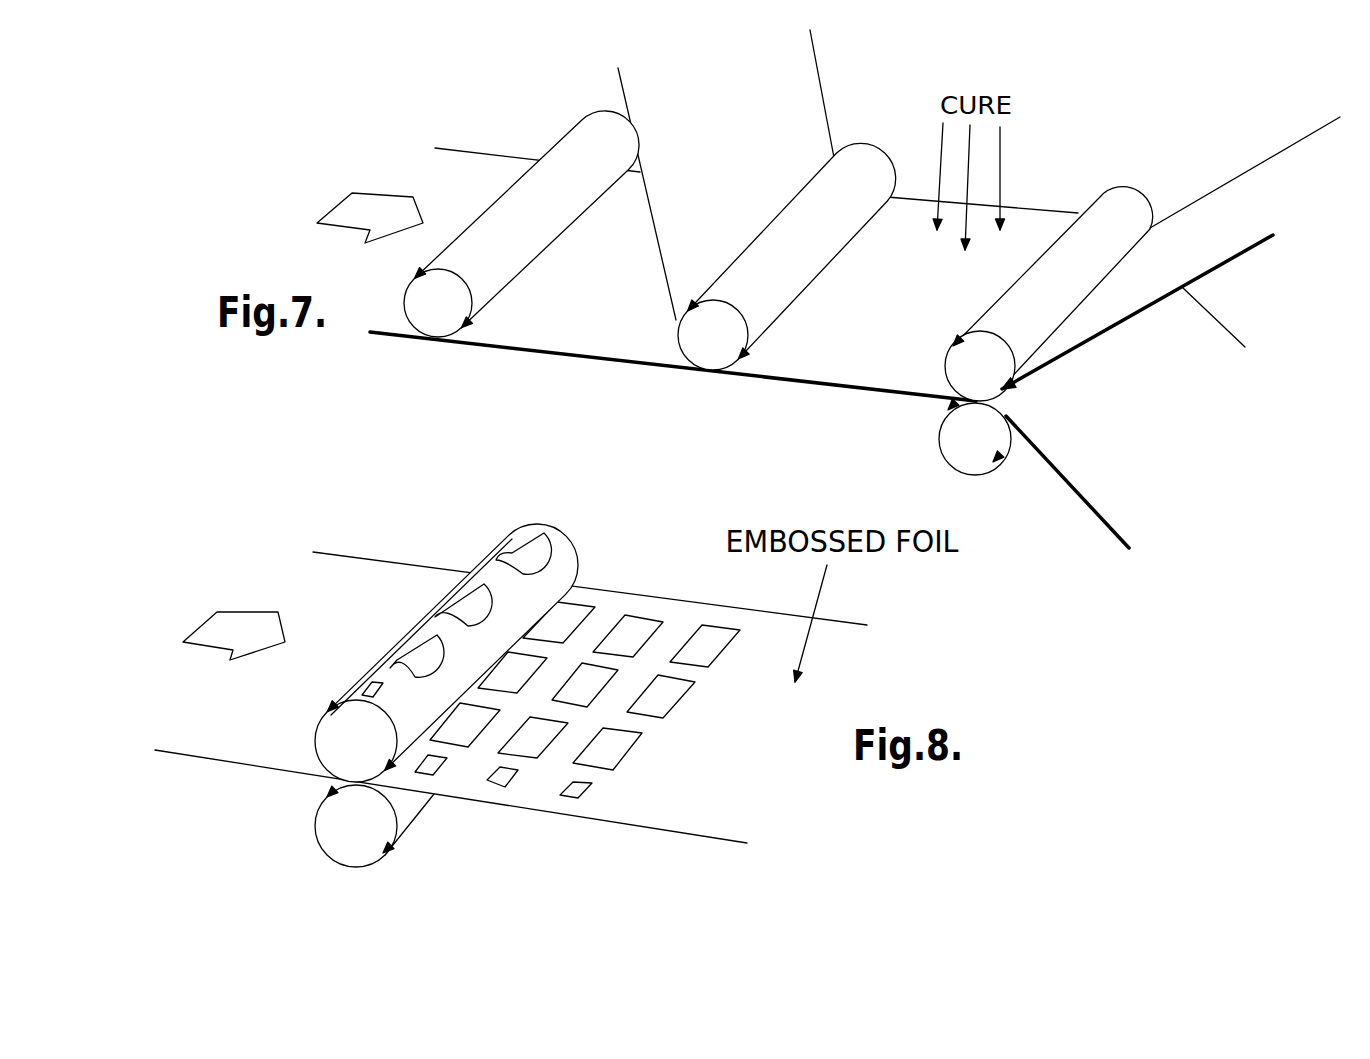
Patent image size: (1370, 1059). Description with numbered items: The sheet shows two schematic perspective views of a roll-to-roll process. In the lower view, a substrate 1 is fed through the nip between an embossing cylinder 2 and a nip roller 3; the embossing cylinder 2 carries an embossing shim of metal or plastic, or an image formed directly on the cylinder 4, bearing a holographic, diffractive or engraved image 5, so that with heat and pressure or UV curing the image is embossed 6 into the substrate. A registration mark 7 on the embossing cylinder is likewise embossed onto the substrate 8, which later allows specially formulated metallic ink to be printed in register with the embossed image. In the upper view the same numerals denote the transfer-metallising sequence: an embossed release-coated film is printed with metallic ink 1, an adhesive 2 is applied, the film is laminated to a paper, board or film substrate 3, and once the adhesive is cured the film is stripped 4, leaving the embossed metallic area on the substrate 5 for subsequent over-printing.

In FIG. 7, the substrate 1 is at (435, 197).
In FIG. 8, the substrate 1 is at (357, 623).
In FIG. 7, the embossing cylinder 2 is at (545, 188).
In FIG. 8, the embossing cylinder 2 is at (537, 527).
In FIG. 7, the nip roller 3 is at (770, 133).
In FIG. 8, the nip roller 3 is at (328, 835).
In FIG. 7, the embossing shim 4 is at (1150, 380).
In FIG. 8, the embossing shim 4 is at (557, 568).
In FIG. 7, the holographic/diffractive or engraved image 5 is at (1238, 212).
In FIG. 8, the holographic/diffractive or engraved image 5 is at (517, 552).
In FIG. 8, the embossed image 6 is at (660, 702).
In FIG. 8, the registration mark 7 is at (363, 682).
In FIG. 8, the registration mark on substrate 8 is at (563, 790).